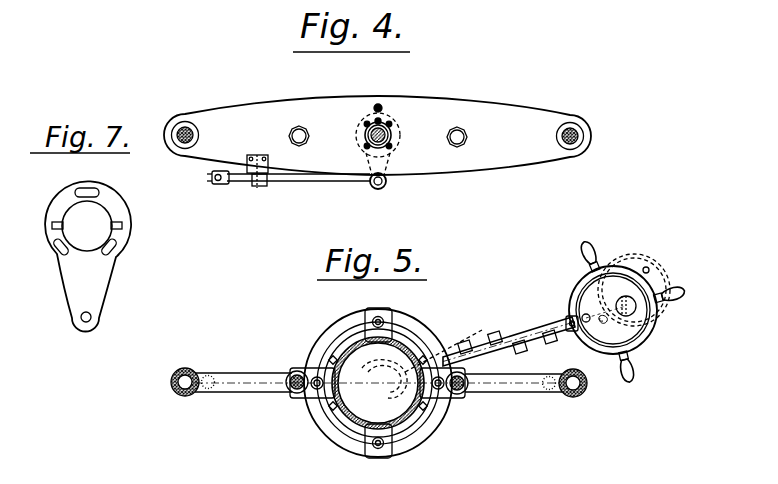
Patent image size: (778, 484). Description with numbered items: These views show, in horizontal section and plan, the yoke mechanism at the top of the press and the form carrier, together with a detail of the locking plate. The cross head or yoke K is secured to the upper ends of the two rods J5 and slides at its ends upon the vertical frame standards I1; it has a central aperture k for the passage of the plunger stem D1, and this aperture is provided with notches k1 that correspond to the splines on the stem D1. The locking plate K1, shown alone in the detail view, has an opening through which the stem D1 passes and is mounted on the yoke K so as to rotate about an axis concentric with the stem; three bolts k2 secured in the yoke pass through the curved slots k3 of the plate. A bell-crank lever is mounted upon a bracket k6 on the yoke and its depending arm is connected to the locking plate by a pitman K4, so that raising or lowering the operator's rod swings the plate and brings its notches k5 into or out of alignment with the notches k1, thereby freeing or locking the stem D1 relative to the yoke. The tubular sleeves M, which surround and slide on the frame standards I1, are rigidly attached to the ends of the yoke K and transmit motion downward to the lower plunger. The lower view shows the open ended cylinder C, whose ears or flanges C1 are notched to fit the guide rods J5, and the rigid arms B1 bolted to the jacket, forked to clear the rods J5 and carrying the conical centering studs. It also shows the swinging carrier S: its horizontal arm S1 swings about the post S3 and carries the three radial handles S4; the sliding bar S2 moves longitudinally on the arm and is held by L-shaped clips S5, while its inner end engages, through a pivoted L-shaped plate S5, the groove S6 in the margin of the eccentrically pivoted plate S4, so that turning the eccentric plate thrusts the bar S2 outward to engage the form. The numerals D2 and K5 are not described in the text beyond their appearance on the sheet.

In FIG. 4, the cross head or yoke K is at (377, 135).
In FIG. 4, the frame standards I1 is at (199, 136).
In FIG. 5, the frame standards I1 is at (171, 380).
In FIG. 4, the rods J5 is at (300, 127).
In FIG. 5, the rods J5 is at (297, 371).
In FIG. 4, the bracket / hole in the yoke k6 is at (258, 155).
In FIG. 4, the aperture of the yoke k is at (389, 128).
In FIG. 4, the bolts k2 is at (365, 148).
In FIG. 4, the notches k1 is at (365, 135).
In FIG. 4, the stem D1 is at (366, 120).
In FIG. 4, the shaft D2 is at (391, 127).
In FIG. 4, the notches of the locking plate k5 is at (390, 147).
In FIG. 7, the notches of the locking plate k5 is at (111, 225).
In FIG. 4, the locking plate K1 is at (386, 181).
In FIG. 7, the locking plate K1 is at (90, 273).
In FIG. 4, the bell-crank lever / pitman K4 is at (311, 182).
In FIG. 4, the clevis K5 is at (253, 184).
In FIG. 7, the curved slots k3 is at (86, 192).
In FIG. 5, the open ended cylinder C is at (378, 383).
In FIG. 5, the ears or flanges C1 is at (385, 316).
In FIG. 5, the swinging or oscillating carrier S is at (414, 349).
In FIG. 5, the rigid arms B1 is at (233, 378).
In FIG. 5, the tubular rods or sleeves M is at (191, 368).
In FIG. 5, the sliding bar S2 is at (517, 334).
In FIG. 5, the L-shaped plate / L-shaped clips S5 is at (465, 342).
In FIG. 5, the horizontal arm S1 is at (606, 354).
In FIG. 5, the post or support S3 is at (647, 268).
In FIG. 5, the eccentrically pivoted plate / radial handles S4 is at (612, 236).
In FIG. 5, the groove S6 is at (642, 326).